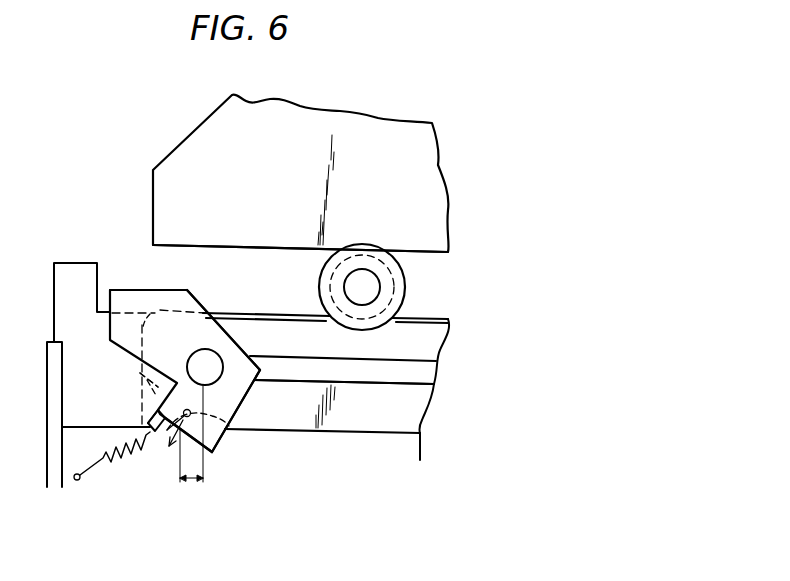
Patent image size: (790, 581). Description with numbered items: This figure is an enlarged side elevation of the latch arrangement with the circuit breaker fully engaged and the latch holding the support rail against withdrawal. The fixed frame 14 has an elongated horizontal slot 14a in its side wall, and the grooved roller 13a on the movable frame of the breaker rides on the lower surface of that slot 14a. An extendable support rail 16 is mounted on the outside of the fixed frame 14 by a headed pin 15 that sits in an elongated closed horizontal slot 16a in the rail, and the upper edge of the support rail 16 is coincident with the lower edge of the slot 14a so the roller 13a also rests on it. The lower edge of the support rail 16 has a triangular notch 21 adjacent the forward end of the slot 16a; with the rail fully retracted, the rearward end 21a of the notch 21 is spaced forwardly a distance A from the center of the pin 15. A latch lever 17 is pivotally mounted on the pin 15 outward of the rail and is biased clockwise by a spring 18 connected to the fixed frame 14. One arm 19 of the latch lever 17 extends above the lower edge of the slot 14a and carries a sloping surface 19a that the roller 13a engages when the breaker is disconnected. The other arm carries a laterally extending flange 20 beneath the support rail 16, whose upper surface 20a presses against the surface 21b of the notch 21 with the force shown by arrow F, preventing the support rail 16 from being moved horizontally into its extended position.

The roller 13a is at (387, 245).
The fixed frame 14 is at (177, 143).
The elongated horizontal slot 14a is at (229, 246).
The headed pin 15 is at (222, 370).
The extendable support rail 16 is at (338, 426).
The elongated closed horizontal slot 16a is at (393, 381).
The latch lever 17 is at (178, 346).
The spring 18 is at (113, 463).
The arm of latch lever 19 is at (137, 290).
The sloping surface 19a is at (200, 305).
The laterally extending flange 20 is at (167, 420).
The upper surface of flange 20a is at (140, 373).
The triangular notch 21 is at (150, 437).
The rearward end of notch 21a is at (228, 432).
The surface of notch 21b is at (156, 407).
The force arrow F is at (170, 447).
The distance A is at (191, 491).